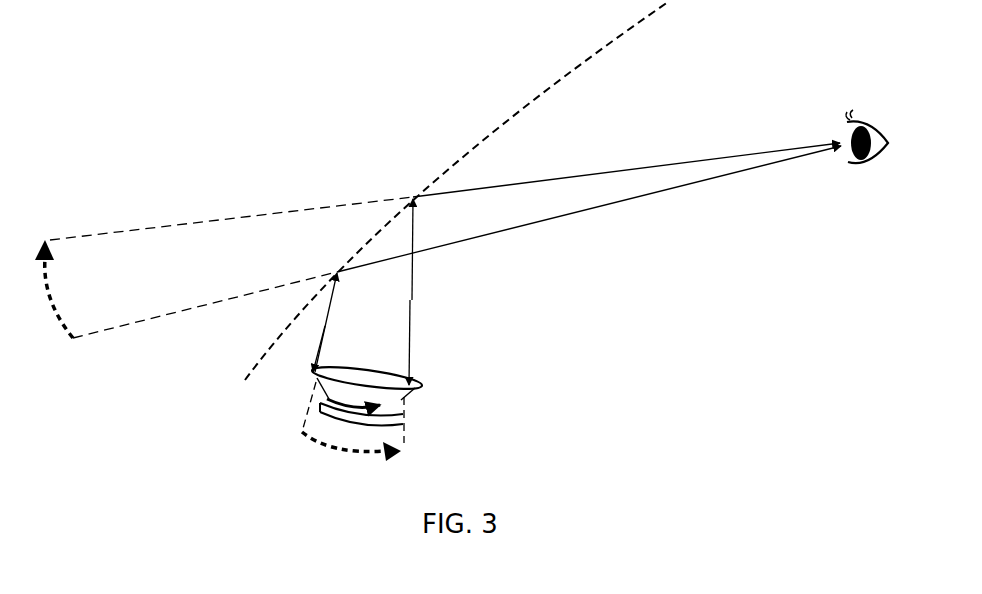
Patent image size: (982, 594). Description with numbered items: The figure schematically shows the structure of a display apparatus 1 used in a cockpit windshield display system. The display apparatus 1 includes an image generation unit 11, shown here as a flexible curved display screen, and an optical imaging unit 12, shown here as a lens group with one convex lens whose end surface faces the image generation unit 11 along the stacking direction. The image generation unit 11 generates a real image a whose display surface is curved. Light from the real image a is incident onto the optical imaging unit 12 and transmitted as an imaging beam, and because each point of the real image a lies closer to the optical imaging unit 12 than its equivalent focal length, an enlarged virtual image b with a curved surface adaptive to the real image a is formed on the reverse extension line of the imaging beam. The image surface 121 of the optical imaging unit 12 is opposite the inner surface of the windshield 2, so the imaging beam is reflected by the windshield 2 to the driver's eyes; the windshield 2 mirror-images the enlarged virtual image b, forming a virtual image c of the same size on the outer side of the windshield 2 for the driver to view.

The display apparatus 1 is at (432, 381).
The image generation unit 11 is at (403, 414).
The optical imaging unit 12 is at (419, 358).
The image surface 121 is at (383, 367).
The windshield 2 is at (464, 153).
The real image a is at (353, 396).
The enlarged virtual image b is at (353, 421).
The virtual image c is at (57, 289).